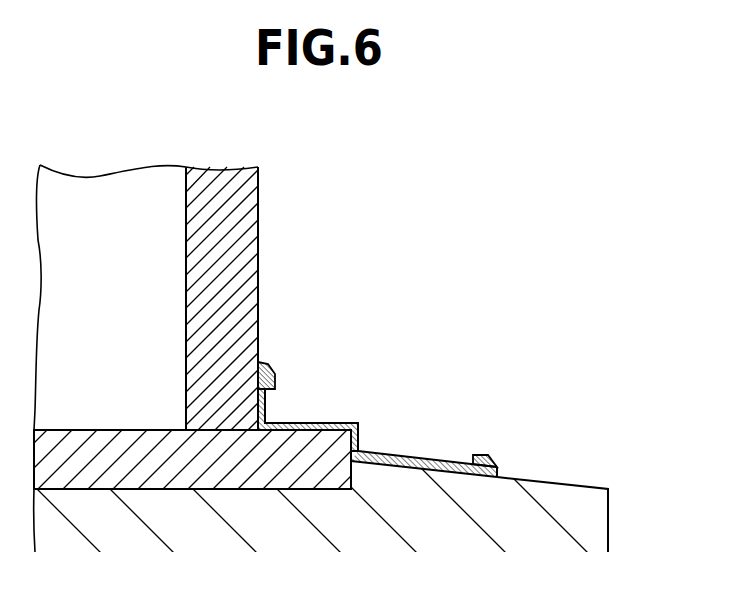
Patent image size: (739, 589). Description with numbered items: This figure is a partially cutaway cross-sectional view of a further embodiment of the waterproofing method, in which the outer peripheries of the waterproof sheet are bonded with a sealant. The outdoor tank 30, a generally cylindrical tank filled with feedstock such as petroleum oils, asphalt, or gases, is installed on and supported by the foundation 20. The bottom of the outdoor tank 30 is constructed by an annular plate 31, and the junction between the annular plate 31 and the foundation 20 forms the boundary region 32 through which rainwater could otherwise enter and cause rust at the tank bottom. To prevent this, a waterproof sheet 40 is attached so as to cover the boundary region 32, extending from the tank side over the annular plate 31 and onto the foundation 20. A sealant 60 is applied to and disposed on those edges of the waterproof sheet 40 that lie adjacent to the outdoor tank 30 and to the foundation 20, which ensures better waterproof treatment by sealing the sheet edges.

The foundation 20 is at (535, 515).
The outdoor tank 30 is at (92, 208).
The annular plate 31 is at (292, 428).
The boundary region 32 is at (359, 450).
The waterproof sheet 40 is at (392, 399).
The sealant 60 is at (267, 363).